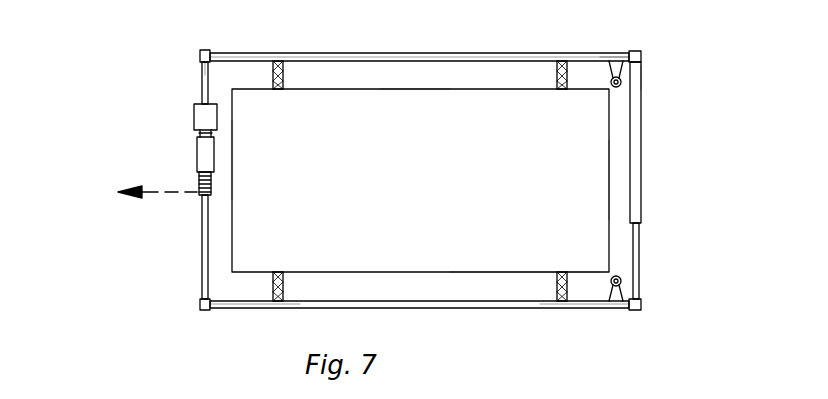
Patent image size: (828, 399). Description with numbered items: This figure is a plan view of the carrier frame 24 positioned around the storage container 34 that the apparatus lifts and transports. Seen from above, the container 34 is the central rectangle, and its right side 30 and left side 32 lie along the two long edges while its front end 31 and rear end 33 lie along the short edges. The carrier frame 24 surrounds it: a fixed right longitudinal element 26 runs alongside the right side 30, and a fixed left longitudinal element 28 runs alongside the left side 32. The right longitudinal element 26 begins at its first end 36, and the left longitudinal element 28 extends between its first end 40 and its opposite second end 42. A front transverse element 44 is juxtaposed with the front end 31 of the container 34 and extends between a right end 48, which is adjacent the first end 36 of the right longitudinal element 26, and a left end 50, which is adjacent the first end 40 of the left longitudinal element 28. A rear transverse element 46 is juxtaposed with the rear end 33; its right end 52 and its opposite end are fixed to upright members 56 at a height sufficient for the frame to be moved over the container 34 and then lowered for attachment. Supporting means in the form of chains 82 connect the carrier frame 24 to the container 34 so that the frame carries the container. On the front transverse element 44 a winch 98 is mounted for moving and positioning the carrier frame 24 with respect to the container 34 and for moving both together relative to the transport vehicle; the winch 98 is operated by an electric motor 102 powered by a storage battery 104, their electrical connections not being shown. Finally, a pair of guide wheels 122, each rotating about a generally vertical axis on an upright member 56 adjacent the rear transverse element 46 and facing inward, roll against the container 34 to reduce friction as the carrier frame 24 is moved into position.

The carrier frame 24 is at (641, 207).
The right longitudinal element 26 is at (455, 53).
The left longitudinal element 28 is at (420, 308).
The right side of container 30 is at (412, 89).
The front end of container 31 is at (232, 152).
The left side of container 32 is at (527, 271).
The rear end of container 33 is at (609, 178).
The container 34 is at (356, 220).
The first end of right longitudinal element 36 is at (245, 53).
The first end of left longitudinal element 40 is at (222, 308).
The second end of left longitudinal element 42 is at (618, 308).
The front transverse element 44 is at (202, 92).
The rear transverse element 46 is at (641, 142).
The right end of front transverse element 48 is at (202, 64).
The left end of front transverse element 50 is at (202, 275).
The right end of rear transverse element 52 is at (641, 78).
The upright member 56 is at (200, 50).
The supporting means (chains) 82 is at (560, 61).
The winch 98 is at (199, 183).
The electric motor 102 is at (197, 147).
The storage battery 104 is at (194, 111).
The guide wheels 122 is at (622, 86).